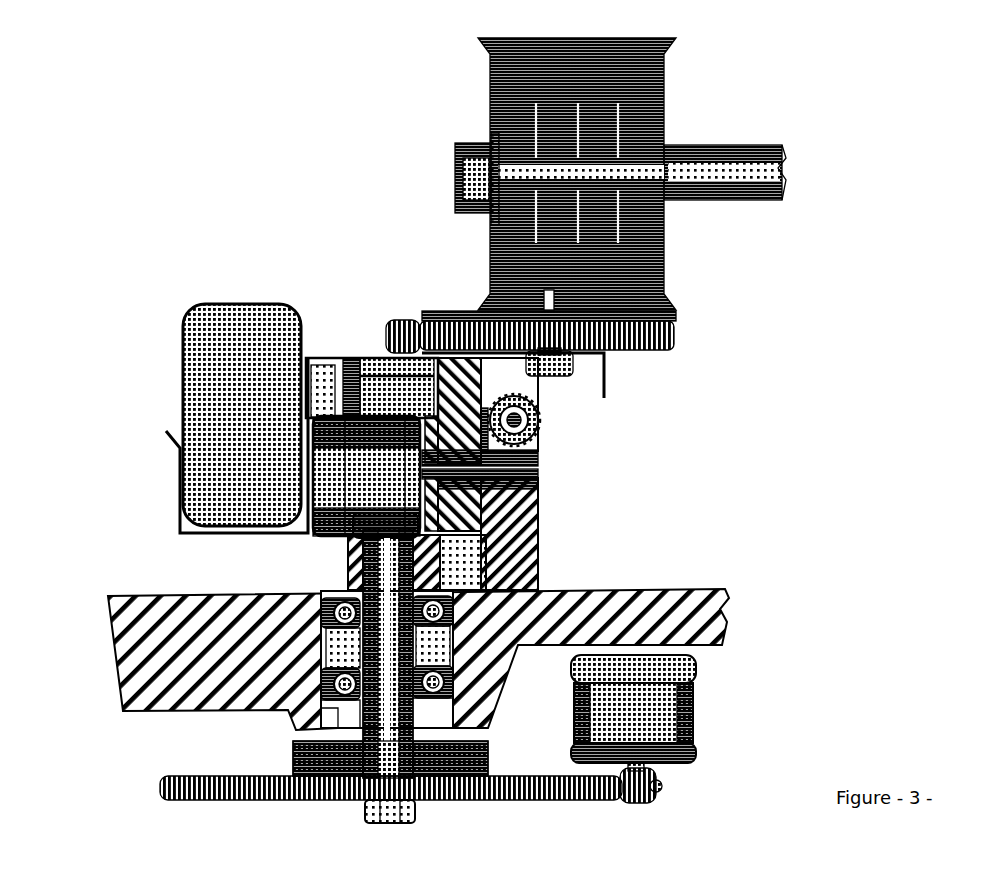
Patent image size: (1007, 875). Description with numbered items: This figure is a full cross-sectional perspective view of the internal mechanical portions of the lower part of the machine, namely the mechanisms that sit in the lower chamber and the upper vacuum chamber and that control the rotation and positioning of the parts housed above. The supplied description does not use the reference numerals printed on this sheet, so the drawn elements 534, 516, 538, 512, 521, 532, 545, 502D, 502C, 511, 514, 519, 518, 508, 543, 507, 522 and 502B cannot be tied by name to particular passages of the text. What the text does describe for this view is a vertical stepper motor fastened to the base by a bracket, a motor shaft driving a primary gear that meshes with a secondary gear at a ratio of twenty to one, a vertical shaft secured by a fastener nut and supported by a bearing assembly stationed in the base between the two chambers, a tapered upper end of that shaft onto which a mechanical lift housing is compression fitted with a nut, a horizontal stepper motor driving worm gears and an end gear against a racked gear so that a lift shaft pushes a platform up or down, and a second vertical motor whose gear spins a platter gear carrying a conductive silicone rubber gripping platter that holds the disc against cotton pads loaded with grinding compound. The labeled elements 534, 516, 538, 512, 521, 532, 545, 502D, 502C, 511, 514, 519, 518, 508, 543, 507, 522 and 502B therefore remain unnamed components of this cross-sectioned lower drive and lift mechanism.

The grinding wheel 534 is at (655, 58).
The wheel arbor shaft 516 is at (656, 252).
The mounting plate 538 is at (668, 328).
The threaded adjustment rod 512 is at (668, 312).
The knurled knob 521 is at (380, 322).
The lever 532 is at (230, 320).
The bracket 545 is at (175, 460).
The motor block 502D is at (348, 348).
The cylinder housing 502C is at (300, 520).
The support column 511 is at (530, 508).
The lower support block 514 is at (532, 540).
The washer 519 is at (532, 452).
The gear 518 is at (535, 410).
The base plate 508 is at (140, 620).
The bearings 543 is at (410, 696).
The vertical shaft 507 is at (350, 565).
The threaded bar 522 is at (152, 780).
The motor 502B is at (655, 700).